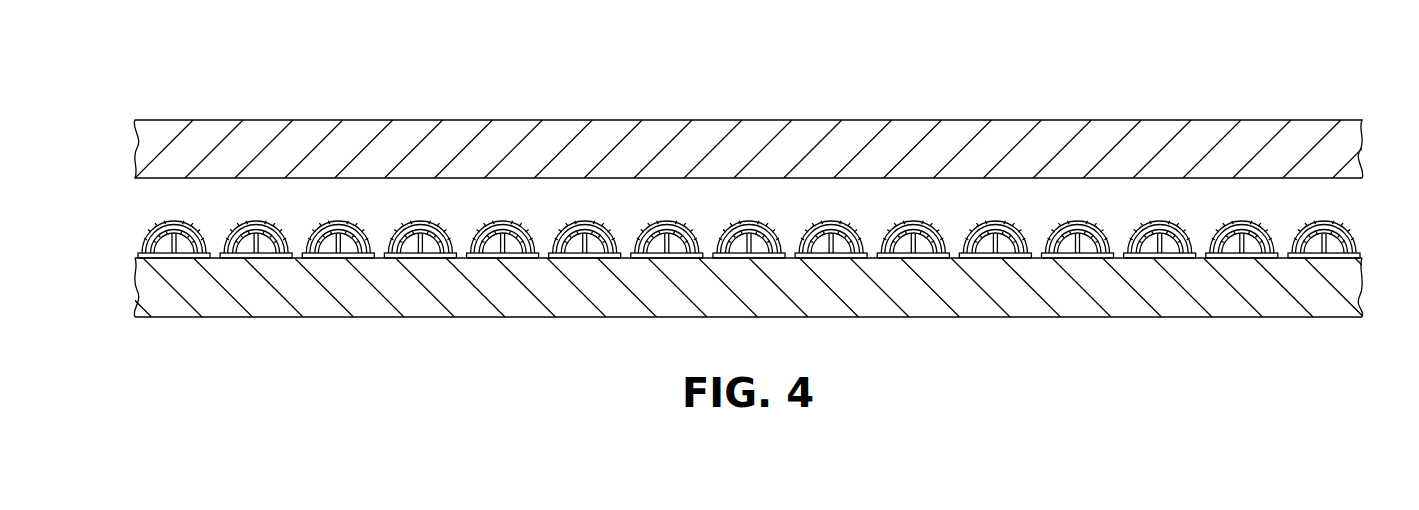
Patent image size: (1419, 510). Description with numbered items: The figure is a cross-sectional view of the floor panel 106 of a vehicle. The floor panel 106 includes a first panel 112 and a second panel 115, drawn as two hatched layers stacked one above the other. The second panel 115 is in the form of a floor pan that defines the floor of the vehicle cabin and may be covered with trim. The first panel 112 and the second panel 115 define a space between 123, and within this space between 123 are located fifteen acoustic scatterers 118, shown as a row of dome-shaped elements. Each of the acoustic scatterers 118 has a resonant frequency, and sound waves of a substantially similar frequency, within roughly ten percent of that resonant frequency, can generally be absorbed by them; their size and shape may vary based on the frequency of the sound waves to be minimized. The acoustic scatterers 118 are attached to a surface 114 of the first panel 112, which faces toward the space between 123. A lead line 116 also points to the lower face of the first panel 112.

The floor panel 106 is at (160, 350).
The first panel 112 is at (313, 307).
The surface 114 is at (460, 258).
The second panel 115 is at (846, 120).
The lower surface of base substrate 116 is at (458, 318).
The acoustic scatterers 118 is at (193, 226).
The space between 123 is at (792, 190).